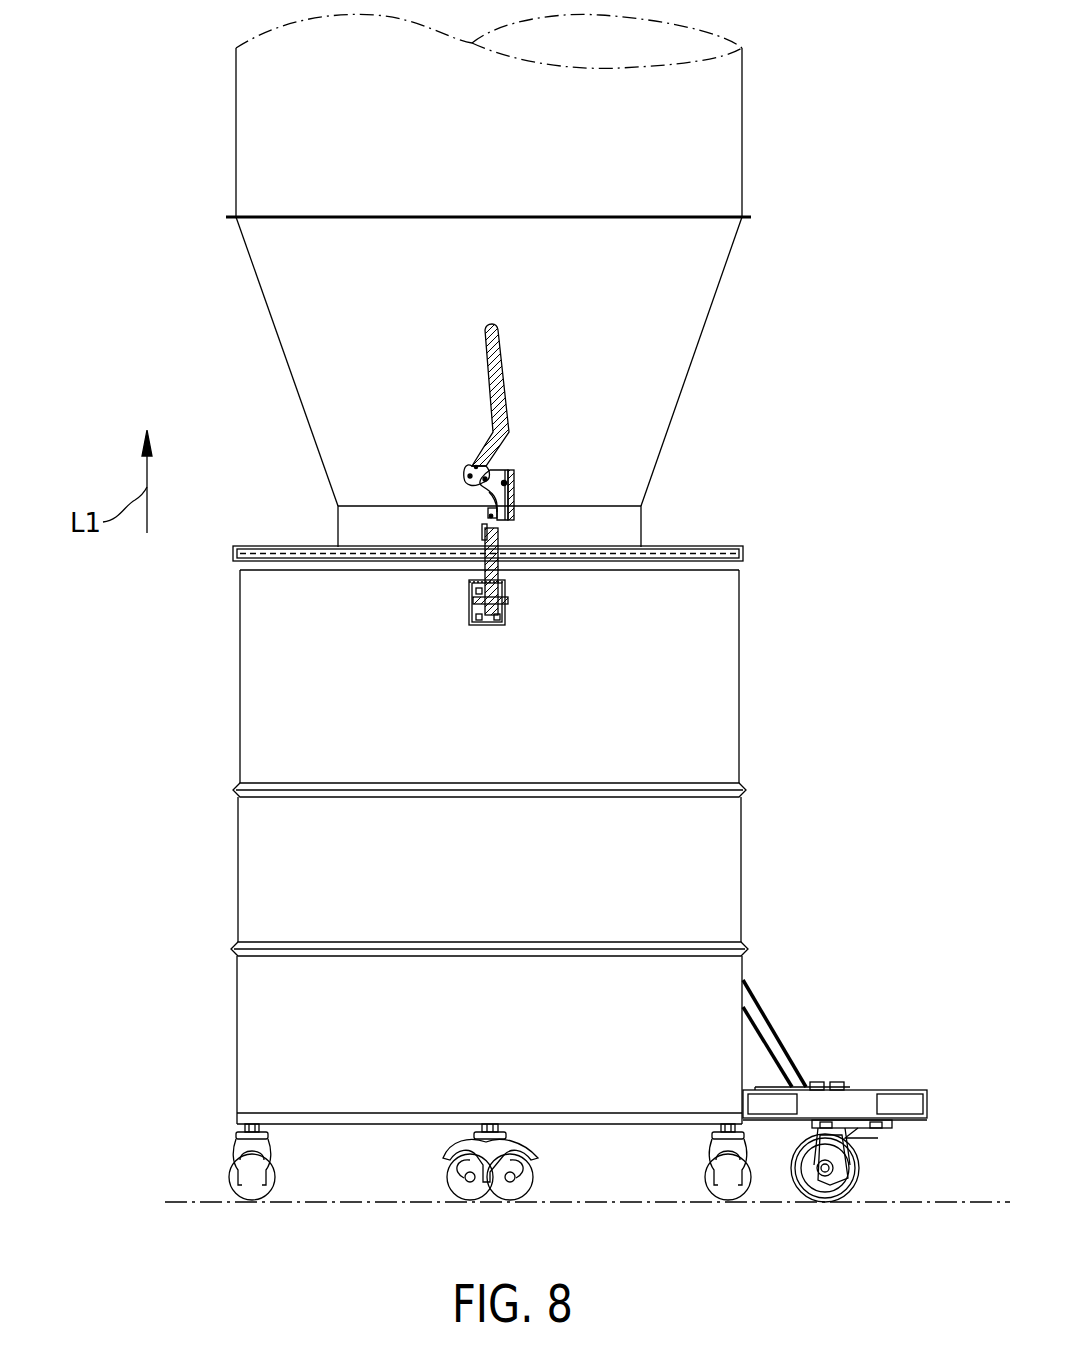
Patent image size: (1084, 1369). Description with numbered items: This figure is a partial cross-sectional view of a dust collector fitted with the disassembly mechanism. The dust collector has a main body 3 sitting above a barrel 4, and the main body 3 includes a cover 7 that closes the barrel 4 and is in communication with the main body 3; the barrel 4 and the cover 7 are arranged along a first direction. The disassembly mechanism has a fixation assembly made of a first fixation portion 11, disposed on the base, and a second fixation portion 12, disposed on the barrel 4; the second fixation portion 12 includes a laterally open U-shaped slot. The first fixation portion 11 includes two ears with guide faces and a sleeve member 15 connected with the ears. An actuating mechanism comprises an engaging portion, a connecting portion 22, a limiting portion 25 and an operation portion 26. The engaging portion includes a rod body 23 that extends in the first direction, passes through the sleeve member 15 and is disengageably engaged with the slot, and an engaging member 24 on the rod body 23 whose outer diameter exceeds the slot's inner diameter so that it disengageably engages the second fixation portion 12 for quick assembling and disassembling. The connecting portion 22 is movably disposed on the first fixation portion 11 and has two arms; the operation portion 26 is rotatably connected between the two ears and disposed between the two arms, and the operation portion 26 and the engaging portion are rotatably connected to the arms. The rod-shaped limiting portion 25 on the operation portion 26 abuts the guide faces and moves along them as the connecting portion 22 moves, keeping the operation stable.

The main body 3 is at (685, 261).
The barrel 4 is at (733, 684).
The cover 7 is at (745, 553).
The first fixation portion 11 is at (514, 496).
The second fixation portion 12 is at (470, 597).
The sleeve member 15 is at (483, 546).
The connecting portion 22 is at (503, 470).
The rod body 23 is at (486, 530).
The engaging member 24 is at (512, 609).
The limiting portion 25 is at (468, 468).
The operation portion 26 is at (500, 378).